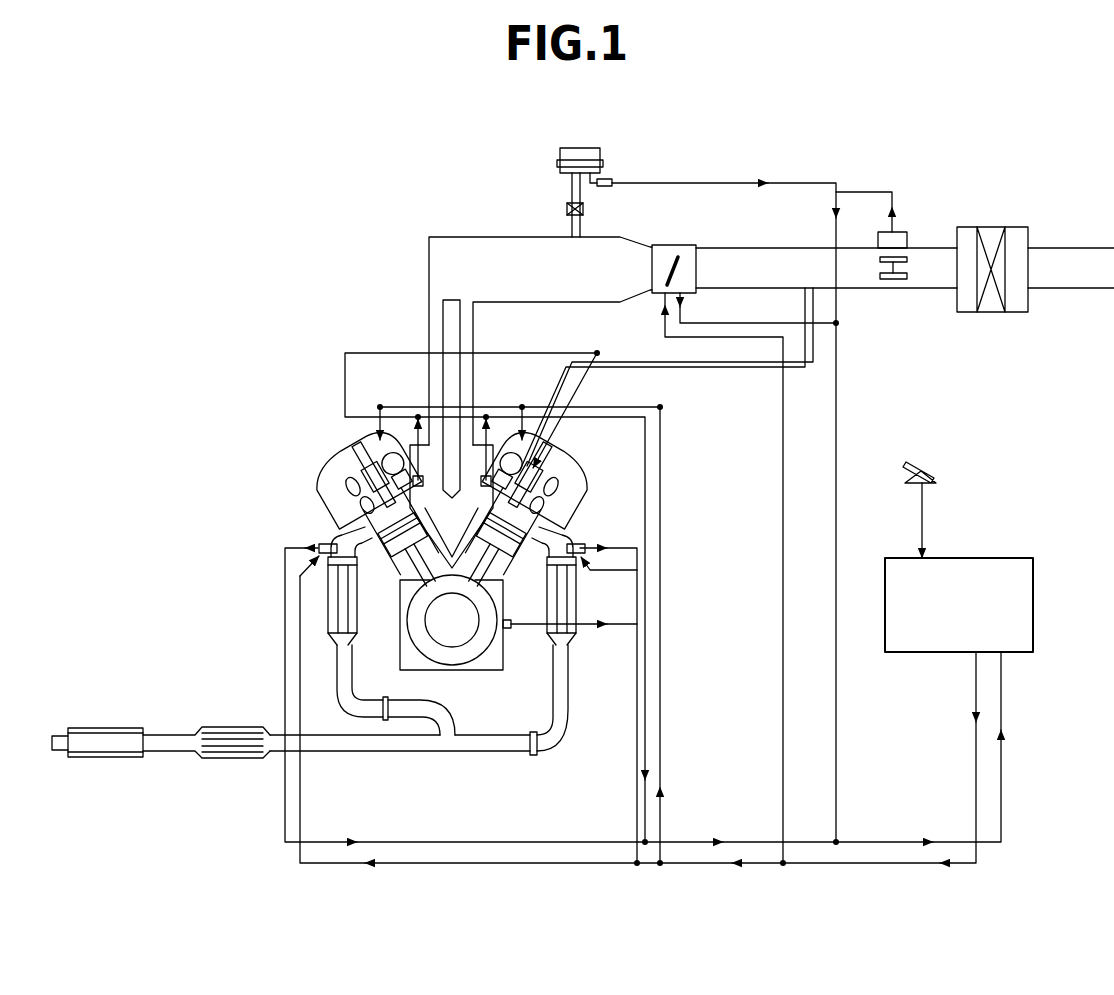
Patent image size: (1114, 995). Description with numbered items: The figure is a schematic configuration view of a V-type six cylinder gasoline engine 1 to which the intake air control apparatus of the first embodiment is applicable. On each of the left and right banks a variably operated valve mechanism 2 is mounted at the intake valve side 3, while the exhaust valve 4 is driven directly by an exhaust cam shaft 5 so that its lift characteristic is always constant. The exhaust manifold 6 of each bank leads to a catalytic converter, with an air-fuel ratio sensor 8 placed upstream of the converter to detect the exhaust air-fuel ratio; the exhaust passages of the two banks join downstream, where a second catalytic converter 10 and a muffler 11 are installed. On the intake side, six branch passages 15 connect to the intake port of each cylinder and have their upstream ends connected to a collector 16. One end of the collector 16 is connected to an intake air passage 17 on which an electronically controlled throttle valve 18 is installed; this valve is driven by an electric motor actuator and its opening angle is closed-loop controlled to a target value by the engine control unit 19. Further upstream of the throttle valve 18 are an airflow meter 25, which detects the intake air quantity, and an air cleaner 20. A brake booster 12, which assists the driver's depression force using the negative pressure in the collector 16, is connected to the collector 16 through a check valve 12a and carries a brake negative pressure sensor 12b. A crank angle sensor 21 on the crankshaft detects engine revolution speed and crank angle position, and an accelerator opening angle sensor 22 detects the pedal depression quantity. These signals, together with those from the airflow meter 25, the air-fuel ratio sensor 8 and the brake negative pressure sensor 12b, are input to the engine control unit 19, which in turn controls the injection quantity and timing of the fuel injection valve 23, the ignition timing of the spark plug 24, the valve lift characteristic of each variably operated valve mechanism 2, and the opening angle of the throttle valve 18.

The gasoline engine 1 is at (311, 466).
The variably operated valve mechanism 2 is at (372, 438).
The intake valve side 3 is at (358, 452).
The exhaust valve 4 is at (362, 506).
The exhaust cam shaft 5 is at (356, 490).
The exhaust manifold 6 is at (565, 530).
The air-fuel ratio sensor 8 is at (582, 544).
The second catalytic converter 10 is at (243, 760).
The muffler 11 is at (120, 758).
The brake booster 12 is at (585, 148).
The check valve 12a is at (566, 208).
The brake negative pressure sensor 12b is at (612, 181).
The branch passage 15 is at (467, 400).
The collector 16 is at (516, 237).
The intake air passage 17 is at (641, 247).
The electronically controlled throttle valve 18 is at (676, 268).
The engine control unit 19 is at (980, 558).
The air cleaner 20 is at (992, 235).
The crank angle sensor 21 is at (508, 630).
The accelerator opening angle sensor 22 is at (905, 472).
The fuel injection valve 23 is at (525, 465).
The spark plug 24 is at (535, 480).
The airflow meter 25 is at (905, 232).